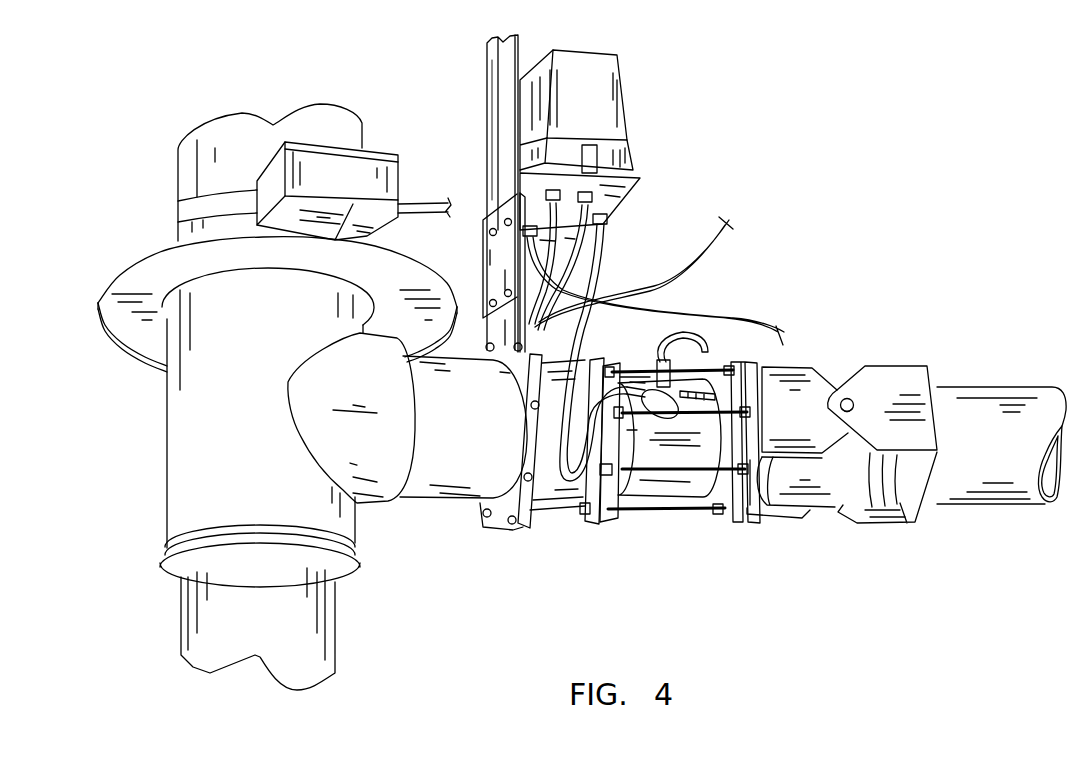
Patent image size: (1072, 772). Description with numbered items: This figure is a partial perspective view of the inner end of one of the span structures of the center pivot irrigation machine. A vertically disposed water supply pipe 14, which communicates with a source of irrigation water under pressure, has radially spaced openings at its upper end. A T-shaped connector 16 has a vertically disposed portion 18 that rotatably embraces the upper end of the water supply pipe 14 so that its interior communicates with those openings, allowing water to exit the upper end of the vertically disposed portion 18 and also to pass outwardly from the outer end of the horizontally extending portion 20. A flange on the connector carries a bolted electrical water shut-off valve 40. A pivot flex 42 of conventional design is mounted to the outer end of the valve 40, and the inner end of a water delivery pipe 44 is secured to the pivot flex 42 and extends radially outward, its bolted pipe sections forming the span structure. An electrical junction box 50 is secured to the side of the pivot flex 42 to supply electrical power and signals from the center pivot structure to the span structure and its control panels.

The water supply pipe 14 is at (321, 627).
The T-shaped connector 16 is at (364, 523).
The vertically disposed portion 18 is at (485, 430).
The horizontally extending portion 20 is at (264, 441).
The electrical water shut-off valve 40 is at (688, 485).
The pivot flex 42 is at (845, 382).
The water delivery pipe 44 is at (1008, 387).
The electrical junction box 50 is at (613, 112).